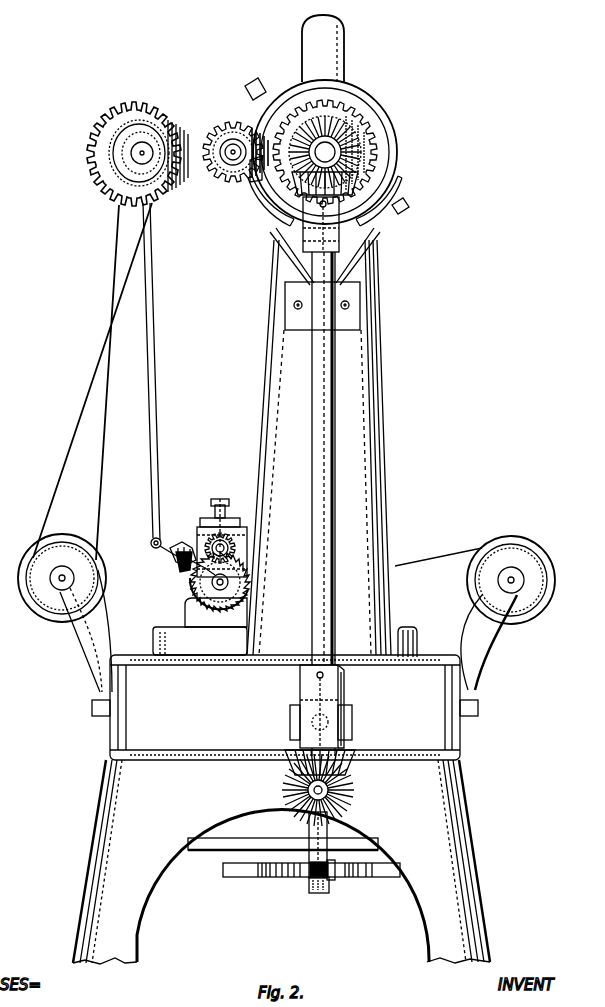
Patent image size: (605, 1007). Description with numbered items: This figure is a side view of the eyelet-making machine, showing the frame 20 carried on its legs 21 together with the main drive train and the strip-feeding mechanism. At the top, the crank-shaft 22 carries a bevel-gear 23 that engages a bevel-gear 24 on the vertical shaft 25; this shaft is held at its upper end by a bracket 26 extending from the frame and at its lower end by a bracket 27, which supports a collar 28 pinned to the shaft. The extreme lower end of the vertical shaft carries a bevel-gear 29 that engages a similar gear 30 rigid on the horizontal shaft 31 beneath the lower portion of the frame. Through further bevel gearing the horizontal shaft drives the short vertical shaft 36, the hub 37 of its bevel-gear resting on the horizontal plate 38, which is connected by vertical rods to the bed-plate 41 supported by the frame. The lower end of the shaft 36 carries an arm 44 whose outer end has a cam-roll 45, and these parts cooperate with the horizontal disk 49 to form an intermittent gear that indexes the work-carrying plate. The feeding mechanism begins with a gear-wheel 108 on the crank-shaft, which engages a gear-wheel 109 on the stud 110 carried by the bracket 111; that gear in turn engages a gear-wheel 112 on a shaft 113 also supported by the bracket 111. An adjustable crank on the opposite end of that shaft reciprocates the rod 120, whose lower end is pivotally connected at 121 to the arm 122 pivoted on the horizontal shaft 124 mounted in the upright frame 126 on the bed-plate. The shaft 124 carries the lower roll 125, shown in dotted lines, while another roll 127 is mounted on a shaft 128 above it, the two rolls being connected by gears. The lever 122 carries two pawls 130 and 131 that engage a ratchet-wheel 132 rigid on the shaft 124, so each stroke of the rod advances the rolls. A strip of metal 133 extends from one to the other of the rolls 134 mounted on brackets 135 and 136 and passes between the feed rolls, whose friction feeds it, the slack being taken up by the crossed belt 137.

The frame 20 is at (345, 52).
The legs 21 is at (146, 915).
The crank-shaft 22 is at (336, 154).
The bevel-gear 23 is at (362, 148).
The bevel-gear 24 is at (286, 206).
The vertical shaft 25 is at (336, 465).
The bracket 26 is at (355, 268).
The bracket 27 is at (352, 712).
The collar 28 is at (300, 689).
The bevel-gear 29 is at (292, 760).
The bevel-gear 30 is at (350, 795).
The horizontal shaft 31 is at (312, 792).
The short vertical shaft or stud 36 is at (318, 894).
The hub 37 is at (308, 830).
The horizontal plate 38 is at (202, 851).
The bed-plate 41 is at (405, 627).
The arm 44 is at (318, 882).
The cam-roll 45 is at (310, 872).
The horizontal disk 49 is at (258, 878).
The gear-wheel 108 is at (368, 122).
The gear-wheel 109 is at (249, 184).
The stud 110 is at (236, 145).
The bracket 111 is at (206, 126).
The gear-wheel 112 is at (92, 153).
The shaft 113 is at (142, 142).
The rod 120 is at (157, 360).
The pivotal connection 121 is at (151, 543).
The arm 122 is at (176, 540).
The horizontal shaft 124 is at (232, 584).
The lower roll 125 is at (200, 597).
The upright frame 126 is at (242, 540).
The roll 127 is at (238, 550).
The shaft 128 is at (221, 520).
The pawl 130 is at (180, 560).
The pawl 131 is at (186, 566).
The ratchet-wheel 132 is at (250, 600).
The strip of metal 133 is at (440, 557).
The rolls 134 is at (40, 615).
The bracket 135 is at (88, 650).
The bracket 136 is at (500, 643).
The crossed belt 137 is at (110, 308).